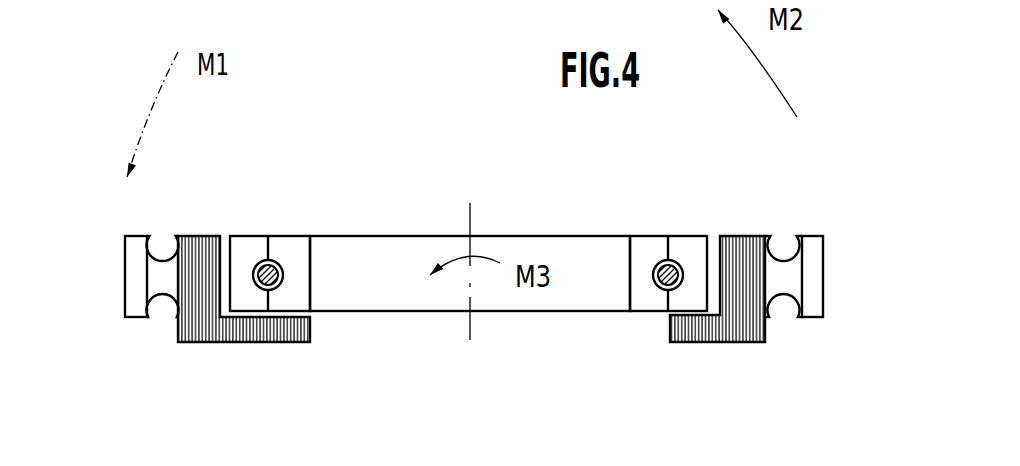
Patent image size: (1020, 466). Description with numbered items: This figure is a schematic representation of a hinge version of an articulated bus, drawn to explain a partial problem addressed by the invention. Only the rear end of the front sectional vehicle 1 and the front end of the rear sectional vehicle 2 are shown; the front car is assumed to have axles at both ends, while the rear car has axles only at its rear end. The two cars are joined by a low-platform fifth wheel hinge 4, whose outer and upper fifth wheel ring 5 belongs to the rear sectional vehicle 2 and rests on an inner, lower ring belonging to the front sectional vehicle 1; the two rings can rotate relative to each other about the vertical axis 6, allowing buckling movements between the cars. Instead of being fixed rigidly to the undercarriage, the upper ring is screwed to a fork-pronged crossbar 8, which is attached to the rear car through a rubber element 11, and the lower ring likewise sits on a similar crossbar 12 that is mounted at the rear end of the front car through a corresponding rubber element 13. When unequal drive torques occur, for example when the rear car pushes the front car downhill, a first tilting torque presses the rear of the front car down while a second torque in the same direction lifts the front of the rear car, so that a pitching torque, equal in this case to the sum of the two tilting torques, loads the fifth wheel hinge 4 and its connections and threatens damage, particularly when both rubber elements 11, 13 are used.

The front sectional vehicle 1 is at (137, 285).
The rear sectional vehicle 2 is at (807, 270).
The low-platform fifth wheel hinge 4 is at (462, 358).
The outer and upper fifth wheel ring 5 is at (245, 253).
The vertical axis 6 is at (472, 215).
The crossbar 8 is at (730, 325).
The rubber element 11 is at (777, 270).
The crossbar 12 is at (213, 337).
The rubber element 13 is at (162, 265).